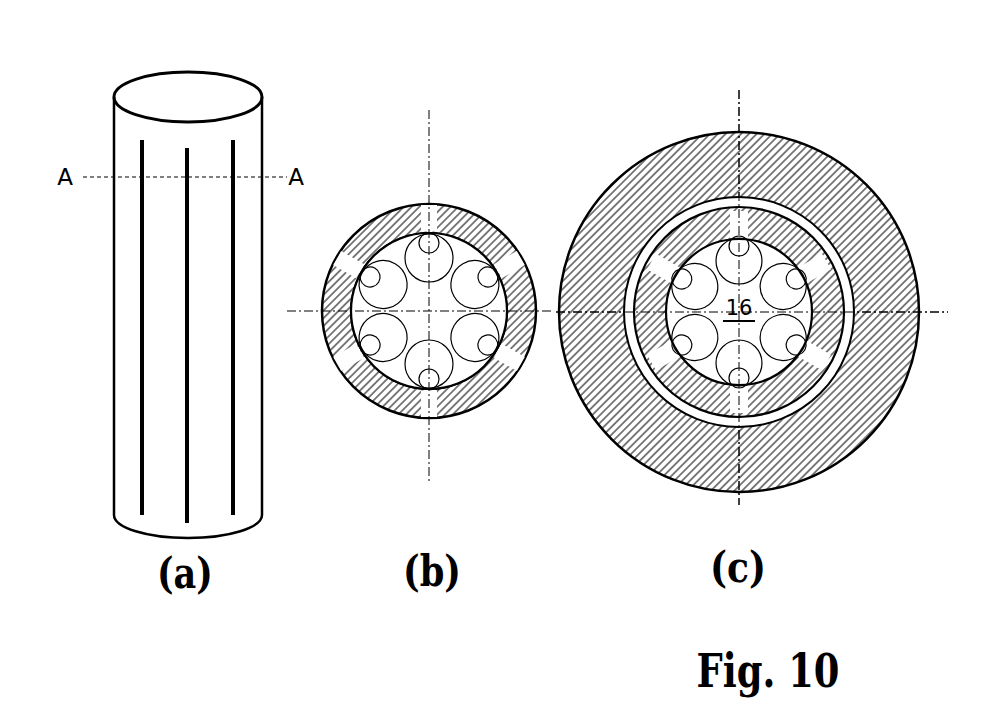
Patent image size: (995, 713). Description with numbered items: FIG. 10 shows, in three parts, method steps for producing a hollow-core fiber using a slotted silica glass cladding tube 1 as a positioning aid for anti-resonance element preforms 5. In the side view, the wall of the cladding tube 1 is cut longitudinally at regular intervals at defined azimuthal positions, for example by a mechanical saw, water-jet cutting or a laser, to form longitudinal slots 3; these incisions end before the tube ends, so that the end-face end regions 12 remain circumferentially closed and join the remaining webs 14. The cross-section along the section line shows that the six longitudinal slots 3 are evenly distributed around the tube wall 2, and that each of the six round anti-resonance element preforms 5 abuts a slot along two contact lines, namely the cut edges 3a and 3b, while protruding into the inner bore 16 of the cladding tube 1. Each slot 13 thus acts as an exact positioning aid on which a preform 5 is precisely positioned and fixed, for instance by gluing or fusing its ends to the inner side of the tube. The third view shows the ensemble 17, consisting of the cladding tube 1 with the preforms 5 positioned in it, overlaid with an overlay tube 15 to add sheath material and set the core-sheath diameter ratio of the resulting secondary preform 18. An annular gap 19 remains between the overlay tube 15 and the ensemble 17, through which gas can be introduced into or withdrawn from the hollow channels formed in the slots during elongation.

The cladding tube 1 is at (225, 63).
The tube wall 2 is at (486, 236).
The longitudinal slots 3 is at (138, 270).
The cut edge 3a is at (356, 352).
The cut edge 3b is at (363, 386).
The anti-resonance element preforms 5 is at (437, 363).
The end-face end regions 12 is at (253, 137).
The slot 13 is at (430, 222).
The webs 14 is at (200, 305).
The overlay tube 15 is at (702, 167).
The inner bore 16 is at (412, 320).
The ensemble 17 is at (511, 154).
The secondary preform 18 is at (822, 124).
The annular gap 19 is at (662, 436).